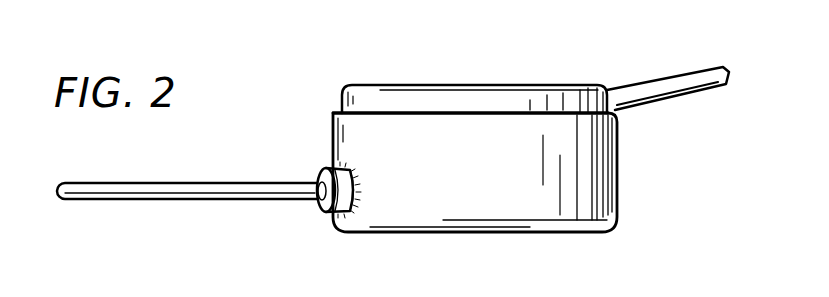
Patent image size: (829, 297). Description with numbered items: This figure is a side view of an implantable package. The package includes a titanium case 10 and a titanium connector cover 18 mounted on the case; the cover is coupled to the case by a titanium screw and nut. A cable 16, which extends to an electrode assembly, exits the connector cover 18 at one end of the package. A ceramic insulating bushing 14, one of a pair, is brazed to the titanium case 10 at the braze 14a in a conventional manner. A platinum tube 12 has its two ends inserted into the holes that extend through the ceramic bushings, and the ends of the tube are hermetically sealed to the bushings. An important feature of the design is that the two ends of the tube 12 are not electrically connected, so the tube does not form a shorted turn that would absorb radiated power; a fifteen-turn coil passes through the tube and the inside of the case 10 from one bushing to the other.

The titanium case 10 is at (619, 160).
The platinum tube 12 is at (211, 181).
The ceramic insulating bushing 14 is at (333, 168).
The braze 14a is at (356, 179).
The cable 16 is at (669, 72).
The titanium connector cover 18 is at (507, 84).